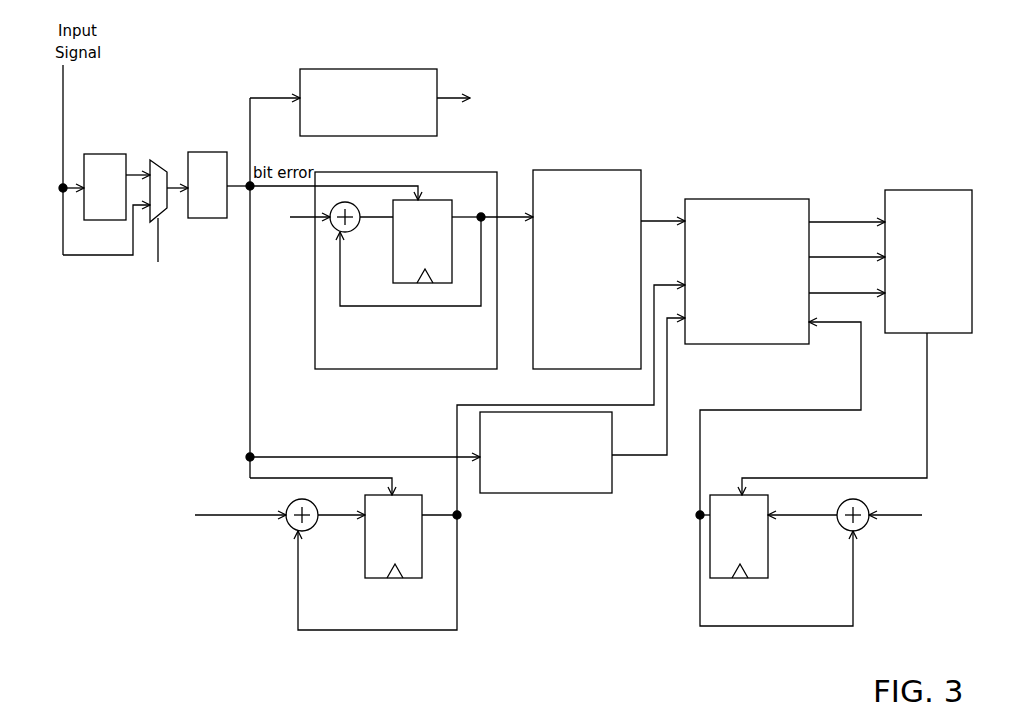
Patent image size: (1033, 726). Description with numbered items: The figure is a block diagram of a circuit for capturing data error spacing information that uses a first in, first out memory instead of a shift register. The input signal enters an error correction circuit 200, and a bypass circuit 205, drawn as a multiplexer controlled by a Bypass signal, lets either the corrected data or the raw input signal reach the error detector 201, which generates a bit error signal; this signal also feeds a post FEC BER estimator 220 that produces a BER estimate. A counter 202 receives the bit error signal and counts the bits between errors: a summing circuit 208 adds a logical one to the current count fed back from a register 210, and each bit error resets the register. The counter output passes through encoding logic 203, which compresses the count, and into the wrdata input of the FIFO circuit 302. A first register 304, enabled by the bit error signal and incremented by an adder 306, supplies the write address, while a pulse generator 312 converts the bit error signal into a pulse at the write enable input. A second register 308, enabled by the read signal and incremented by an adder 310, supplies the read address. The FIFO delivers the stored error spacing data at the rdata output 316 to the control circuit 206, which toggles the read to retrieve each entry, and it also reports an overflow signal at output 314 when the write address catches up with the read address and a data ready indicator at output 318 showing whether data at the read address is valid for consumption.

The error correction circuit 200 is at (100, 154).
The bypass circuit 205 is at (158, 160).
The error detector 201 is at (205, 152).
The post FEC BER estimator 220 is at (375, 69).
The counter 202 is at (371, 270).
The summing circuit 208 is at (333, 228).
The register 210 is at (452, 212).
The encoding logic 203 is at (585, 170).
The FIFO circuit 302 is at (763, 277).
The overflow output 314 is at (805, 205).
The rdata output 316 is at (805, 252).
The data_rdy output 318 is at (808, 290).
The control circuit 206 is at (905, 190).
The pulse generator 312 is at (617, 445).
The adder 306 is at (287, 524).
The first register 304 is at (422, 457).
The adder 310 is at (846, 532).
The second register 308 is at (825, 474).